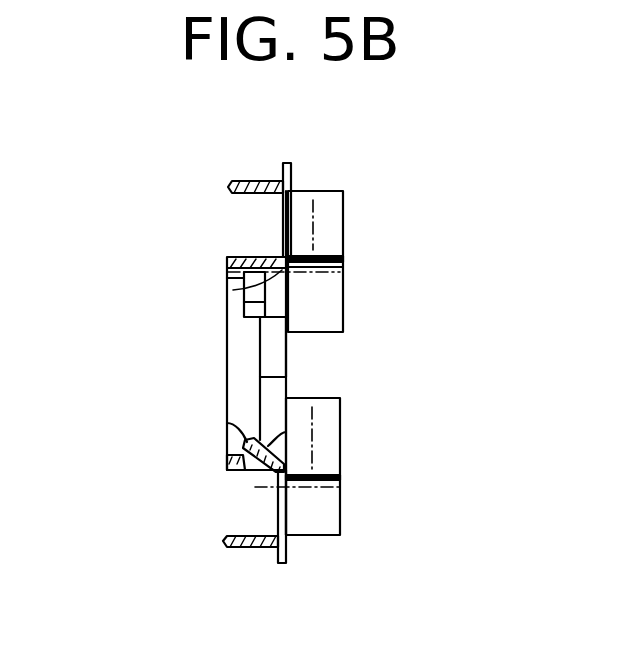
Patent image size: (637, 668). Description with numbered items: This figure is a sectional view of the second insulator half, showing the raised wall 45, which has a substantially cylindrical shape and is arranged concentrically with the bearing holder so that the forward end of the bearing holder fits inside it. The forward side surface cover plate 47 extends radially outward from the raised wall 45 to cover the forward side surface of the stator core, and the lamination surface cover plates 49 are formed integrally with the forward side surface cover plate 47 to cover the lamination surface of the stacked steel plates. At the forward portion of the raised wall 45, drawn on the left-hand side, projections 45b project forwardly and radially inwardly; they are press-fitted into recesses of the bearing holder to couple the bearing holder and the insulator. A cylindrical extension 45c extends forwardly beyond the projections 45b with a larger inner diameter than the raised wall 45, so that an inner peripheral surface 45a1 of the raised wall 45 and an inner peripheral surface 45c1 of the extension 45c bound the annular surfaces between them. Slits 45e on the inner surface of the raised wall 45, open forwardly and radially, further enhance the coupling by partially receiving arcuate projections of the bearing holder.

The raised wall 45 is at (227, 285).
The inner peripheral surface of the raised wall 45a1 is at (278, 440).
The projection 45b is at (268, 298).
The cylindrical extension 45c is at (232, 473).
The inner peripheral surface of the extension 45c1 is at (230, 455).
The slit 45e is at (282, 270).
The forward side surface cover plate 47 is at (288, 210).
The lamination surface cover plate 49 is at (318, 198).